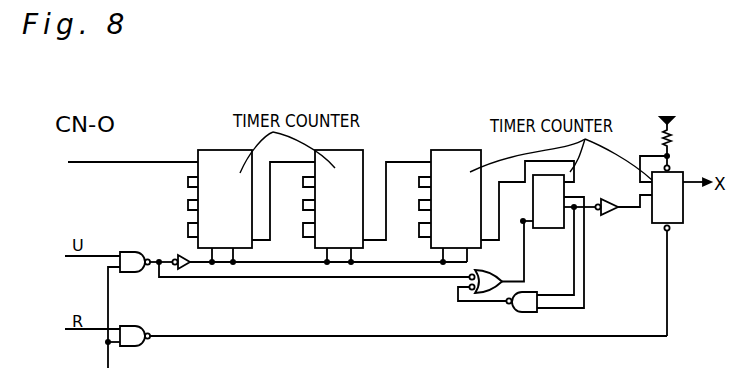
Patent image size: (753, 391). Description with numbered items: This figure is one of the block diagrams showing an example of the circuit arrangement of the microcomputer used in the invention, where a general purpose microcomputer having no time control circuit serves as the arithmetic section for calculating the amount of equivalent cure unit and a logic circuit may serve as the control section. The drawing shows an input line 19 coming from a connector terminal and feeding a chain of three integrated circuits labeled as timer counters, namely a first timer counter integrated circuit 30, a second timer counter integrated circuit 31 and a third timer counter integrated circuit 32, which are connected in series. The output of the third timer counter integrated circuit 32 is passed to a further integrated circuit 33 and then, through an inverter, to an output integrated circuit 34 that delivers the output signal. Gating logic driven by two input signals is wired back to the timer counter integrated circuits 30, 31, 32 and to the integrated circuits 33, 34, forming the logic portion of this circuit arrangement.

The connector terminal line 19 is at (133, 152).
The timer counter IC30 30 is at (220, 206).
The timer counter IC31 31 is at (333, 206).
The timer counter IC32 32 is at (450, 206).
The IC33 33 is at (548, 201).
The IC34 34 is at (675, 226).